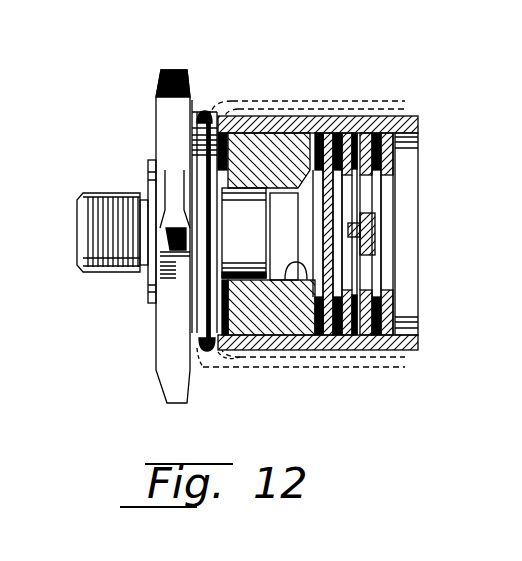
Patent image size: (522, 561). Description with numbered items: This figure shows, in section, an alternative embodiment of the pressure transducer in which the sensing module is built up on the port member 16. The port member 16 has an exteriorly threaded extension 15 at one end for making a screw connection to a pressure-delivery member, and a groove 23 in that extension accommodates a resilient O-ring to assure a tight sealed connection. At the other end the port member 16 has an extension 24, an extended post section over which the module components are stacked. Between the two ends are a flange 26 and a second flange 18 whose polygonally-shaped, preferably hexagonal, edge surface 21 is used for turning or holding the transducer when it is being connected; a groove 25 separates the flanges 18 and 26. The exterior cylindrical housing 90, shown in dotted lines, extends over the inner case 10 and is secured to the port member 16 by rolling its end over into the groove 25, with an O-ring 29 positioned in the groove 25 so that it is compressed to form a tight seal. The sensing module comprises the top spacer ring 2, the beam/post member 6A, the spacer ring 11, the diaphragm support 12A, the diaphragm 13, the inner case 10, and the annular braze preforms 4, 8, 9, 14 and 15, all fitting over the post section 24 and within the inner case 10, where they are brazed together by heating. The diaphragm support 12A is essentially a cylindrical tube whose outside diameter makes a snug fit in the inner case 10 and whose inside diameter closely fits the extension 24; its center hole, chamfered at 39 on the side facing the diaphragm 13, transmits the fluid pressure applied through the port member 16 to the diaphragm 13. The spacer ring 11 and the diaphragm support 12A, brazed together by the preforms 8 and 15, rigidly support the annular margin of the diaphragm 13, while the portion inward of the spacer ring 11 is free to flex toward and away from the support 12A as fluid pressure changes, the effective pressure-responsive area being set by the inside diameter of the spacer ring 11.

The top spacer ring 2 is at (394, 164).
The annular braze preform 4 is at (406, 340).
The beam/post member 6A is at (372, 207).
The annular braze preform 8 is at (372, 133).
The annular braze preform 9 is at (388, 135).
The inner case 10 is at (300, 125).
The spacer ring 11 is at (350, 346).
The diaphragm support 12A is at (258, 135).
The diaphragm 13 is at (330, 334).
The annular braze preform 14 is at (245, 130).
The threaded extension / annular braze preform 15 is at (98, 276).
The port member 16 is at (82, 157).
The second flange 18 is at (157, 117).
The polygonally-shaped edge surface 21 is at (167, 70).
The groove 23 is at (142, 198).
The extension 24 is at (255, 241).
The groove 25 is at (200, 290).
The flange 26 is at (210, 300).
The O-ring 29 is at (202, 110).
The chamfer 39 is at (286, 282).
The exterior cylindrical housing 90 is at (281, 369).